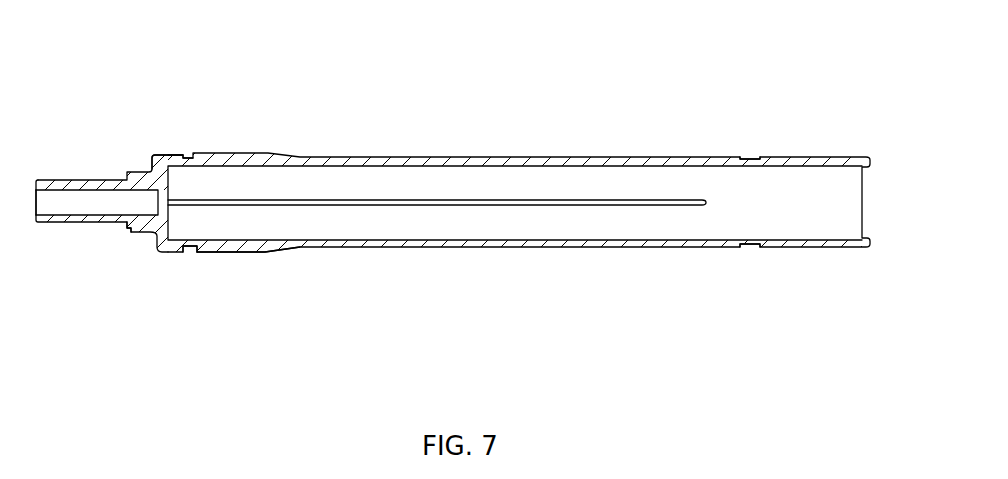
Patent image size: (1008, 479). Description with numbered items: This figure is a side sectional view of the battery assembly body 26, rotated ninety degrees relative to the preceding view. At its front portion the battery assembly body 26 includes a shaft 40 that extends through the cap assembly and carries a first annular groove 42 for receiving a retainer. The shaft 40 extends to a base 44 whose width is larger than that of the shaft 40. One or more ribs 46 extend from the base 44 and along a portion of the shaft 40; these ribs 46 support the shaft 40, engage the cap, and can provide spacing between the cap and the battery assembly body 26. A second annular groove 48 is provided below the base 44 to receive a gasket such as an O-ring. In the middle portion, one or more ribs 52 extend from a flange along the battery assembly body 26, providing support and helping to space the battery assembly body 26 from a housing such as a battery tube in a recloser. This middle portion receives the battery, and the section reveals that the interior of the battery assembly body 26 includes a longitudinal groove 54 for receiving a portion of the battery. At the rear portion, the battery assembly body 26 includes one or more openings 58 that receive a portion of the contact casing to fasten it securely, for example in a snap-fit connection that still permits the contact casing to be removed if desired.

The battery assembly body 26 is at (457, 139).
The shaft 40 is at (73, 181).
The first annular groove 42 is at (43, 224).
The base 44 is at (167, 167).
The ribs 46 is at (133, 228).
The second annular groove 48 is at (193, 244).
The ribs 52 is at (257, 252).
The longitudinal groove 54 is at (375, 200).
The openings 58 is at (740, 158).